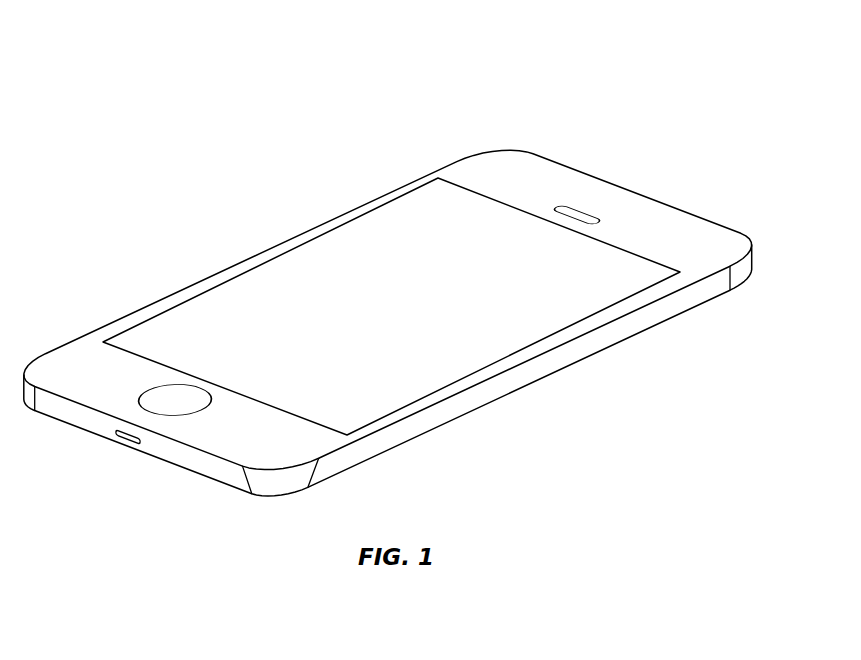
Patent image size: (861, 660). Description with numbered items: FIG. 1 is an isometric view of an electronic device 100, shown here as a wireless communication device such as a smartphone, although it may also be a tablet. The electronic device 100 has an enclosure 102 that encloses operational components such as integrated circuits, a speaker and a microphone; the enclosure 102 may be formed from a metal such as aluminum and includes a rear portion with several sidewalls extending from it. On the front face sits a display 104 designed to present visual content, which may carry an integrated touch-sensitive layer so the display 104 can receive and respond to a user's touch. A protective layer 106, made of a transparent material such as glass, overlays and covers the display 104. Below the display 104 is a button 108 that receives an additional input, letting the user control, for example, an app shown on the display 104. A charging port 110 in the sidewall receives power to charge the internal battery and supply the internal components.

The electronic device 100 is at (117, 92).
The enclosure 102 is at (672, 360).
The display 104 is at (400, 318).
The protective layer 106 is at (518, 178).
The button 108 is at (150, 385).
The charging port 110 is at (125, 444).